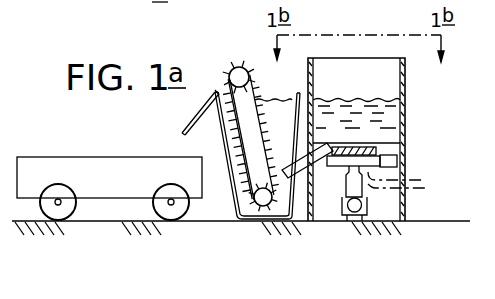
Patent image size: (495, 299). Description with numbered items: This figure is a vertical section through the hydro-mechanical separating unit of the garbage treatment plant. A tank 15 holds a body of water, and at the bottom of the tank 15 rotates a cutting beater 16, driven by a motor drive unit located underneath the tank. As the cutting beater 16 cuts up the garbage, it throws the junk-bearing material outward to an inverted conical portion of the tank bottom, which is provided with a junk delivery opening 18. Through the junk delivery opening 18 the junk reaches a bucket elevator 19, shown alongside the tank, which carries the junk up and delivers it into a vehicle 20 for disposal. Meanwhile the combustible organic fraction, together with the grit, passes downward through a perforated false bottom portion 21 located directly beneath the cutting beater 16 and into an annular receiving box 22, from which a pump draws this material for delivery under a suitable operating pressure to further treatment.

The tank 15 is at (363, 88).
The cutting beater 16 is at (360, 147).
The junk delivery opening 18 is at (333, 146).
The bucket elevator 19 is at (246, 198).
The vehicle 20 is at (100, 185).
The perforated false bottom portion 21 is at (368, 158).
The annular receiving box 22 is at (397, 162).